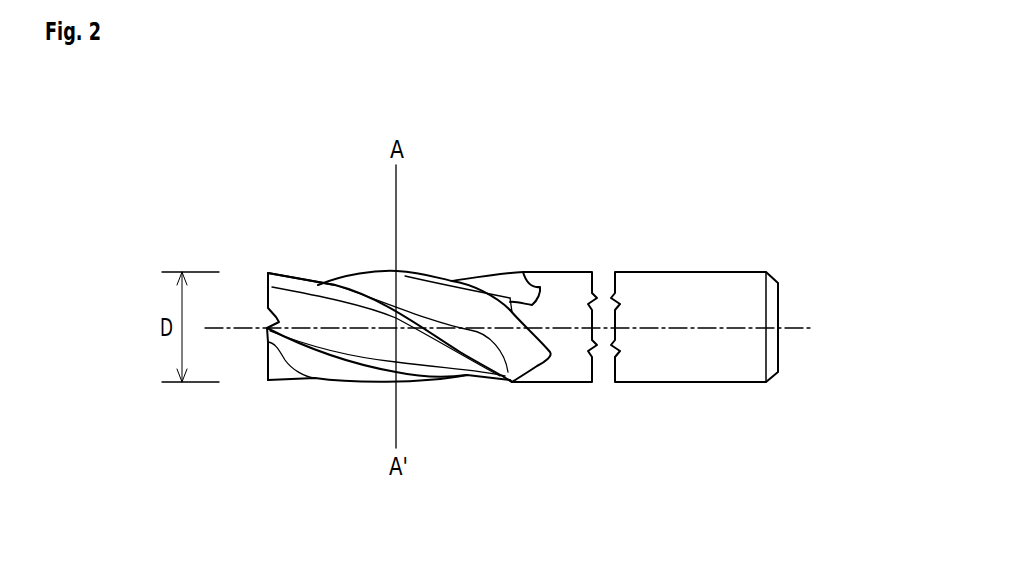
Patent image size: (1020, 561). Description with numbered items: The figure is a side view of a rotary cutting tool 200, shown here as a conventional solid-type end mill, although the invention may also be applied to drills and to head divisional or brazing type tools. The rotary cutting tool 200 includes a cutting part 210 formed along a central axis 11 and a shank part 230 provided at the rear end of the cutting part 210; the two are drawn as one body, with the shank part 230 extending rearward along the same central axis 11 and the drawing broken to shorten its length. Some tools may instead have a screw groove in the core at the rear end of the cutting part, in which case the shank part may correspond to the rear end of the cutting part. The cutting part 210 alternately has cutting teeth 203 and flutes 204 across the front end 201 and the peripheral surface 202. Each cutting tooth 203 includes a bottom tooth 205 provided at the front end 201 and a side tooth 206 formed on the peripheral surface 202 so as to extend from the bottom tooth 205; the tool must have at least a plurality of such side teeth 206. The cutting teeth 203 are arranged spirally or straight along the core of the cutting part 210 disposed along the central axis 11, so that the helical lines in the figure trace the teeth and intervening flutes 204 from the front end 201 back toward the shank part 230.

The rotary cutting tool 200 is at (738, 542).
The central axis 11 is at (680, 330).
The shank part 230 is at (732, 260).
The cutting part 210 is at (380, 308).
The front end 201 is at (252, 275).
The peripheral surface 202 is at (456, 282).
The cutting tooth 203 is at (385, 287).
The flute 204 is at (347, 286).
The bottom tooth 205 is at (270, 276).
The side tooth 206 is at (293, 278).